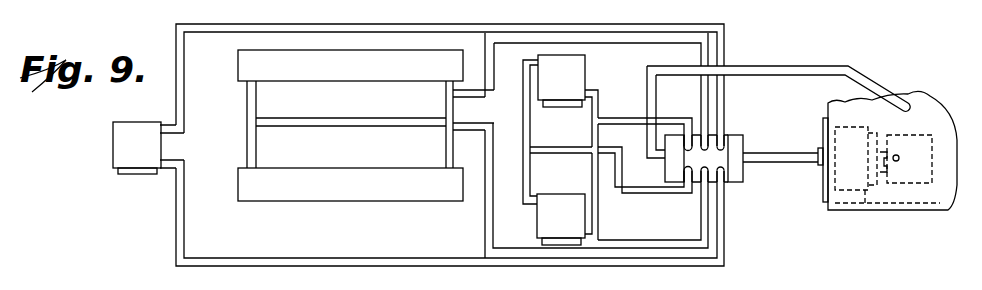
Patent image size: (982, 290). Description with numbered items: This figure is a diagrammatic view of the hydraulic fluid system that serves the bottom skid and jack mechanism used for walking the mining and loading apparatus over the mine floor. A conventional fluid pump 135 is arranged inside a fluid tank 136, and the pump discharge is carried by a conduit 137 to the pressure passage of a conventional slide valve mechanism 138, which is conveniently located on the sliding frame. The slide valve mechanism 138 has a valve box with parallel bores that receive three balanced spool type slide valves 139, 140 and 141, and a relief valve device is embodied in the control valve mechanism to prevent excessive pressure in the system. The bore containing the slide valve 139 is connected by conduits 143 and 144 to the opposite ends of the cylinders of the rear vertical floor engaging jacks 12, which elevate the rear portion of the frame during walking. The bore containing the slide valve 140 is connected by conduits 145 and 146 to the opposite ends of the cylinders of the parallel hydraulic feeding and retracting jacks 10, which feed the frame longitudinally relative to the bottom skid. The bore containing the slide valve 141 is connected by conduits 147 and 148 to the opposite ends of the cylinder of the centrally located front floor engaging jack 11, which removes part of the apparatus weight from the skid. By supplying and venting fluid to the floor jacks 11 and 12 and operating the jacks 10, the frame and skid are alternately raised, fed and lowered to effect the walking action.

The hydraulic feeding and retracting jacks 10 is at (344, 68).
The vertical hydraulic floor engaging jack 11 is at (130, 145).
The vertical hydraulic floor engaging jacks 12 is at (566, 90).
The fluid pump 135 is at (865, 204).
The fluid tank 136 is at (930, 110).
The conduit 137 is at (797, 158).
The slide valve mechanism 138 is at (740, 186).
The slide valve 139 is at (688, 155).
The slide valve 140 is at (721, 144).
The slide valve 141 is at (718, 158).
The conduit 143 is at (651, 190).
The conduit 144 is at (622, 118).
The conduit 145 is at (707, 229).
The conduit 146 is at (633, 40).
The conduit 147 is at (226, 27).
The conduit 148 is at (400, 264).